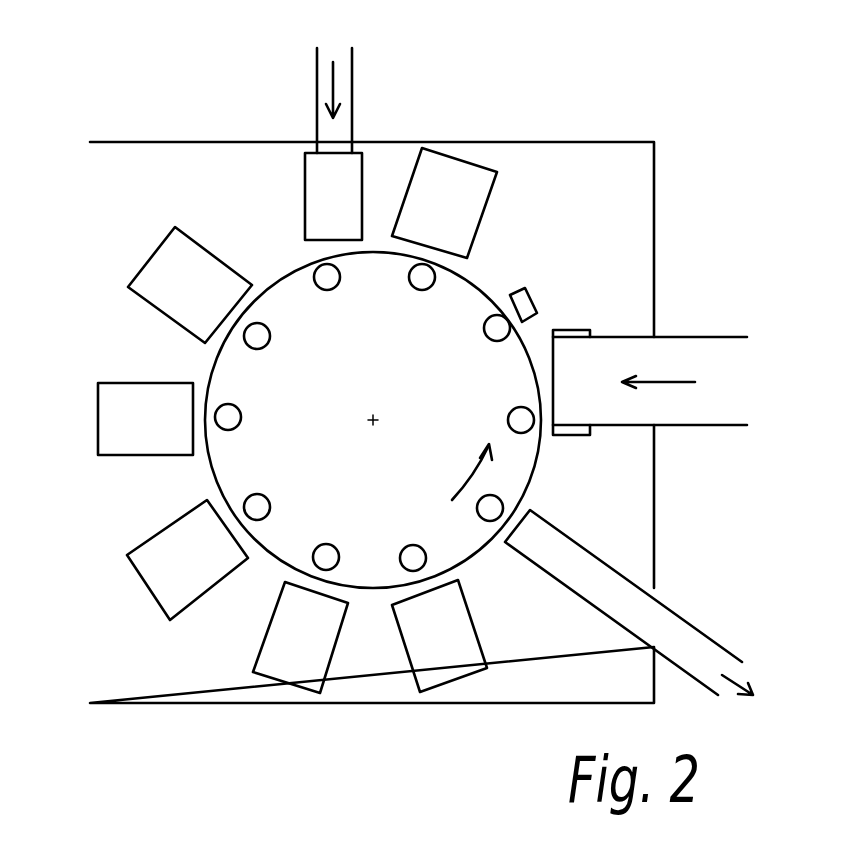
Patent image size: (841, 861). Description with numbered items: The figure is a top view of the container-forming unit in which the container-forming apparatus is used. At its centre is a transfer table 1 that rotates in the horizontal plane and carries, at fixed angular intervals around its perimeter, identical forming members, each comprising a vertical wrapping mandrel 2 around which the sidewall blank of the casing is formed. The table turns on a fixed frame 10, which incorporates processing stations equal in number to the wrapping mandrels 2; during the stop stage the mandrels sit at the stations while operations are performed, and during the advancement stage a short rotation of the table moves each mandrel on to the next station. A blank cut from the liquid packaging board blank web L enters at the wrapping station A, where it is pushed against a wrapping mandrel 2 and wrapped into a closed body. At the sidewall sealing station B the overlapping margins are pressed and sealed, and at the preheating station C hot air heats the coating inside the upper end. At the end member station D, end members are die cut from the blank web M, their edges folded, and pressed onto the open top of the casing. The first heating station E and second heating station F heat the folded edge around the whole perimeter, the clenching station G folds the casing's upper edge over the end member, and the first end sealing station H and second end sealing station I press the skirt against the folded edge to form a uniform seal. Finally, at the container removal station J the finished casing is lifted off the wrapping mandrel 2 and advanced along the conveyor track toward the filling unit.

The transfer table 1 is at (292, 297).
The wrapping mandrel 2 is at (262, 338).
The fixed frame 10 is at (638, 253).
The wrapping station A is at (573, 330).
The sidewall sealing station B is at (524, 298).
The preheating station C is at (450, 172).
The end member station D is at (351, 182).
The first heating station E is at (167, 265).
The second heating station F is at (127, 413).
The clenching station G is at (163, 570).
The first end sealing station H is at (292, 663).
The second end sealing station I is at (438, 667).
The container removal station J is at (548, 518).
The blank web L is at (713, 410).
The blank web M is at (345, 72).